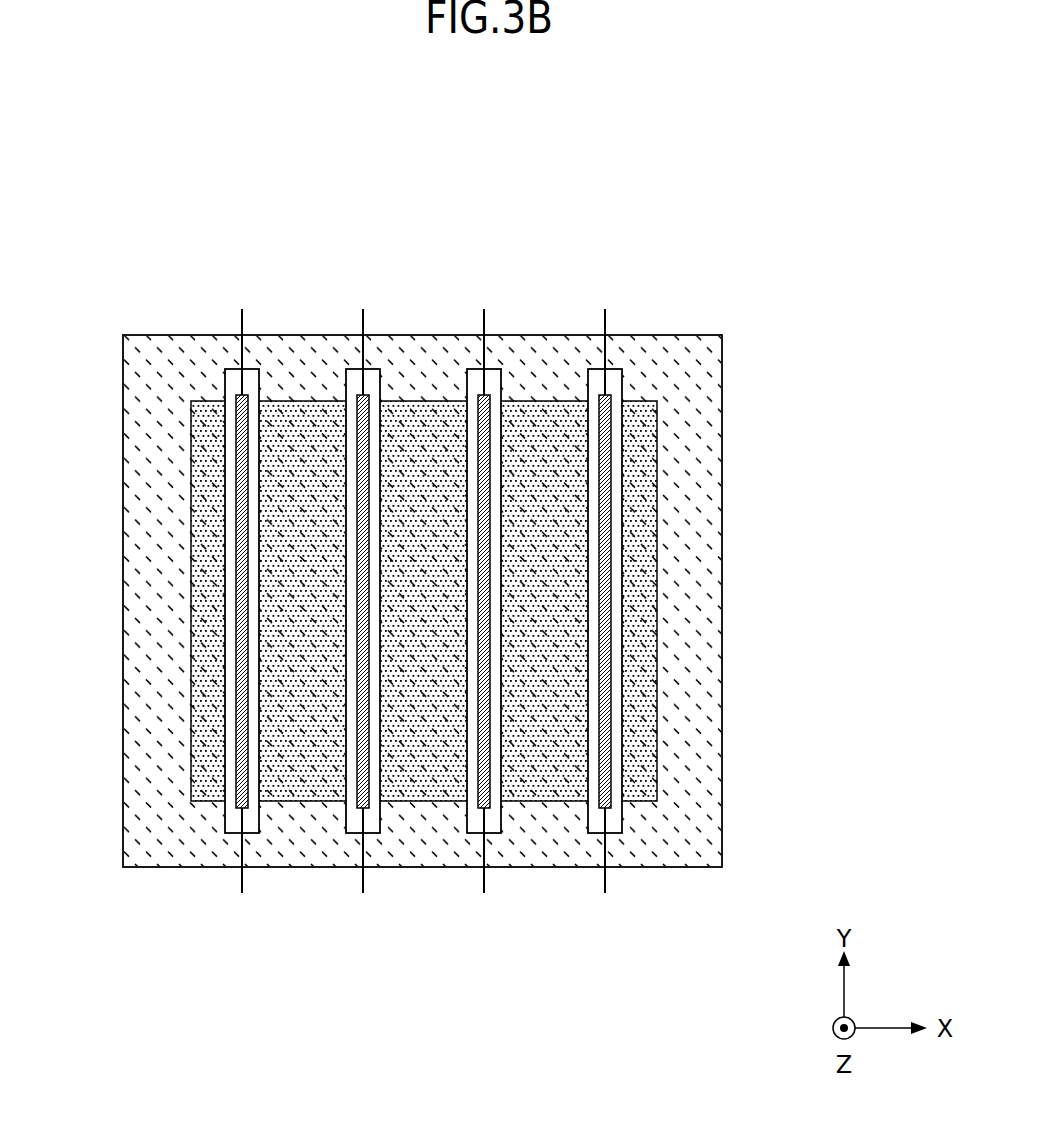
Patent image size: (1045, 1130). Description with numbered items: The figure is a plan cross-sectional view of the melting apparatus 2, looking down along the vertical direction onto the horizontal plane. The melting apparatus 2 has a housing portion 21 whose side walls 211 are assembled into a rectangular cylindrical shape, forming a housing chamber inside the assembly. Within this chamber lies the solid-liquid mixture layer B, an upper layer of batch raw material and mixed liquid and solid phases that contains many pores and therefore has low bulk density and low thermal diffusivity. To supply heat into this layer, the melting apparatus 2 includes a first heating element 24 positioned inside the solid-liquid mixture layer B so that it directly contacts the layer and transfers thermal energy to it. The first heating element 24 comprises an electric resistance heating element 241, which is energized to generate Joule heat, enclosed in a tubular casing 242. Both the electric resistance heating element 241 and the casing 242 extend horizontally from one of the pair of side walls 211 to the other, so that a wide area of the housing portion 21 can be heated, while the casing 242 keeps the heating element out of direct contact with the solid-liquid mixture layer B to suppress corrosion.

The melting apparatus 2 is at (131, 181).
The housing portion 21 is at (104, 488).
The side walls 211 is at (415, 345).
The first heating element 24 is at (307, 252).
The electric resistance heating element 241 is at (236, 398).
The casing 242 is at (259, 423).
The solid-liquid mixture layer B is at (552, 422).